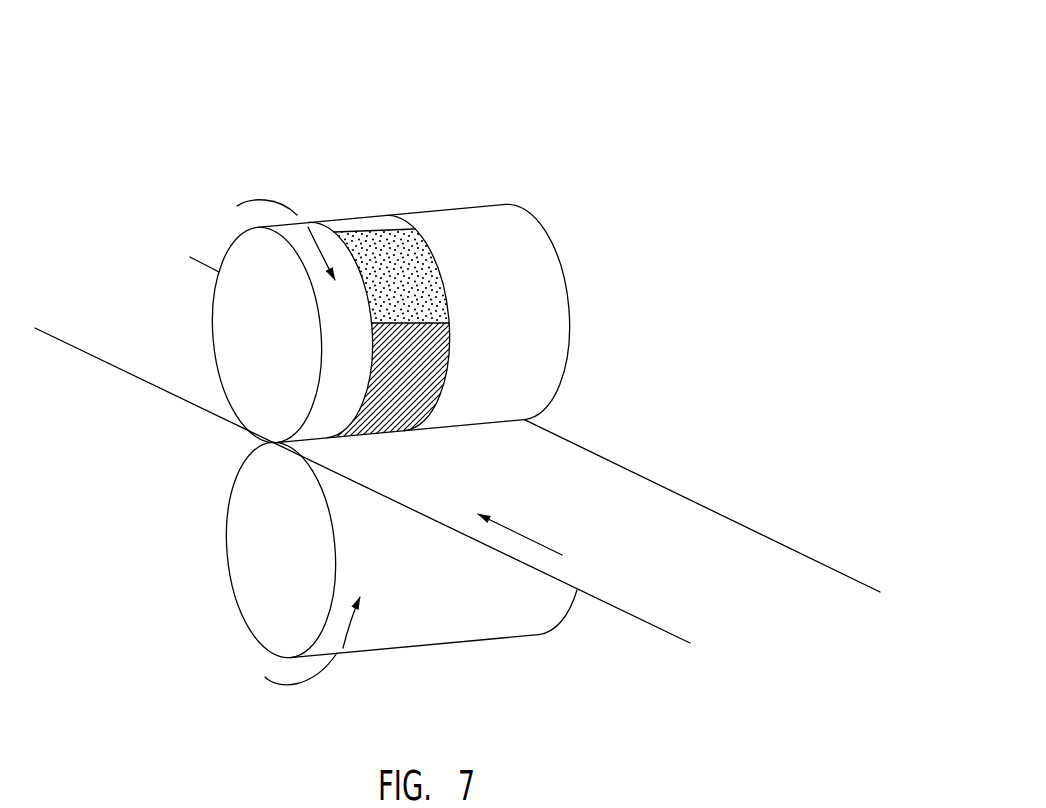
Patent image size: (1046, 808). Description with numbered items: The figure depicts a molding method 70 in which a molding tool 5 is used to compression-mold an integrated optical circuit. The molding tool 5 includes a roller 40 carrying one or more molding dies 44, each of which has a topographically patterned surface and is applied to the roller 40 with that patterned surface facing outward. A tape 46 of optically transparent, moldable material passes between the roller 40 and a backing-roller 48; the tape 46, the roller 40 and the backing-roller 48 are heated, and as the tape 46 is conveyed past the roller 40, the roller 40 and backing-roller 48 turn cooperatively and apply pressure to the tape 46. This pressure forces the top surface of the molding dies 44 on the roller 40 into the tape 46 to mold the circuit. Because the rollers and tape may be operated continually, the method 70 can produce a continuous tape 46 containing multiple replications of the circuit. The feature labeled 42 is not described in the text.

The molding tool 5 is at (158, 300).
The roller 40 is at (548, 340).
The roller surface 42 is at (518, 247).
The molding die 44 is at (448, 325).
The tape 46 is at (635, 507).
The backing-roller 48 is at (472, 613).
The molding method 70 is at (202, 70).